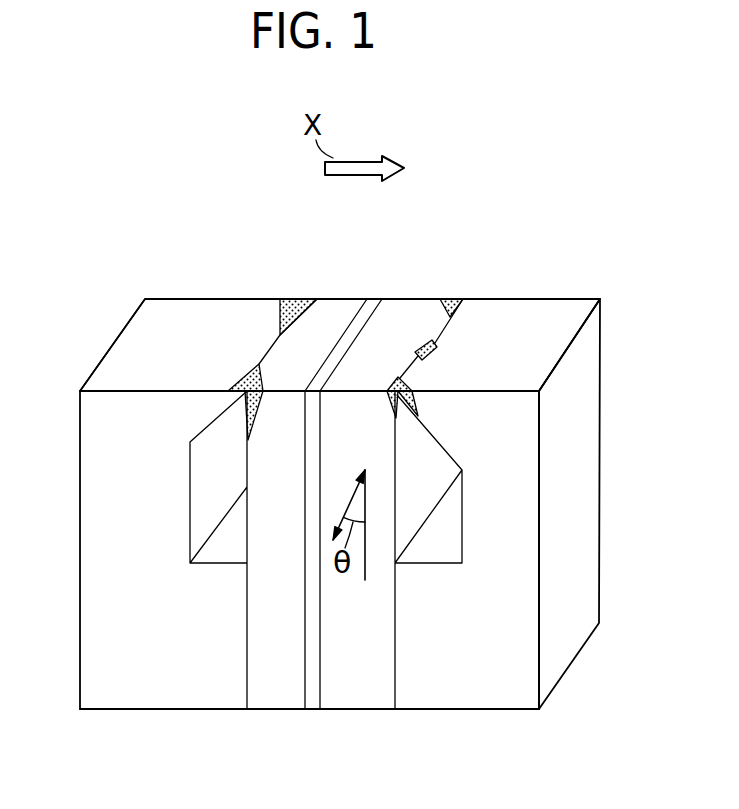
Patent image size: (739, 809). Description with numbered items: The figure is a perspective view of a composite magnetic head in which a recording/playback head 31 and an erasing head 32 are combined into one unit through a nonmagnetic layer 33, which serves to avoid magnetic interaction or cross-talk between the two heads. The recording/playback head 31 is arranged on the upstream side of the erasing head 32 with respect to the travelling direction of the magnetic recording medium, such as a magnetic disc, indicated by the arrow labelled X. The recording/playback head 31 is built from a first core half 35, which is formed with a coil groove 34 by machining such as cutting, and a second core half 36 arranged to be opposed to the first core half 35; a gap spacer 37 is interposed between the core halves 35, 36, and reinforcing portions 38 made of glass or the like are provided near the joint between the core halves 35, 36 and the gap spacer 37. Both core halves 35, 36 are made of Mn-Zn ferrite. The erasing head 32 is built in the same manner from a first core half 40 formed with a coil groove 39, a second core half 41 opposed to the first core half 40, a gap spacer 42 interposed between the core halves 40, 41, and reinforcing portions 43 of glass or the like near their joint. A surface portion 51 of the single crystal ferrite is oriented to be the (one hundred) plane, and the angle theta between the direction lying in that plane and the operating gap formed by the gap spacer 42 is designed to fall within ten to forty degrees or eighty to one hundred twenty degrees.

The recording/playback head 31 is at (200, 285).
The erasing head 32 is at (482, 290).
The nonmagnetic layer 33 is at (368, 313).
The coil groove 34 is at (190, 503).
The first core half 35 is at (138, 340).
The second core half 36 is at (327, 313).
The gap spacer 37 is at (272, 333).
The reinforcing portions 38 is at (297, 299).
The coil groove 39 is at (462, 522).
The first core half 40 is at (560, 310).
The second core half 41 is at (407, 315).
The gap spacer 42 is at (443, 330).
The reinforcing portions 43 is at (450, 299).
The surface portion 51 is at (368, 700).